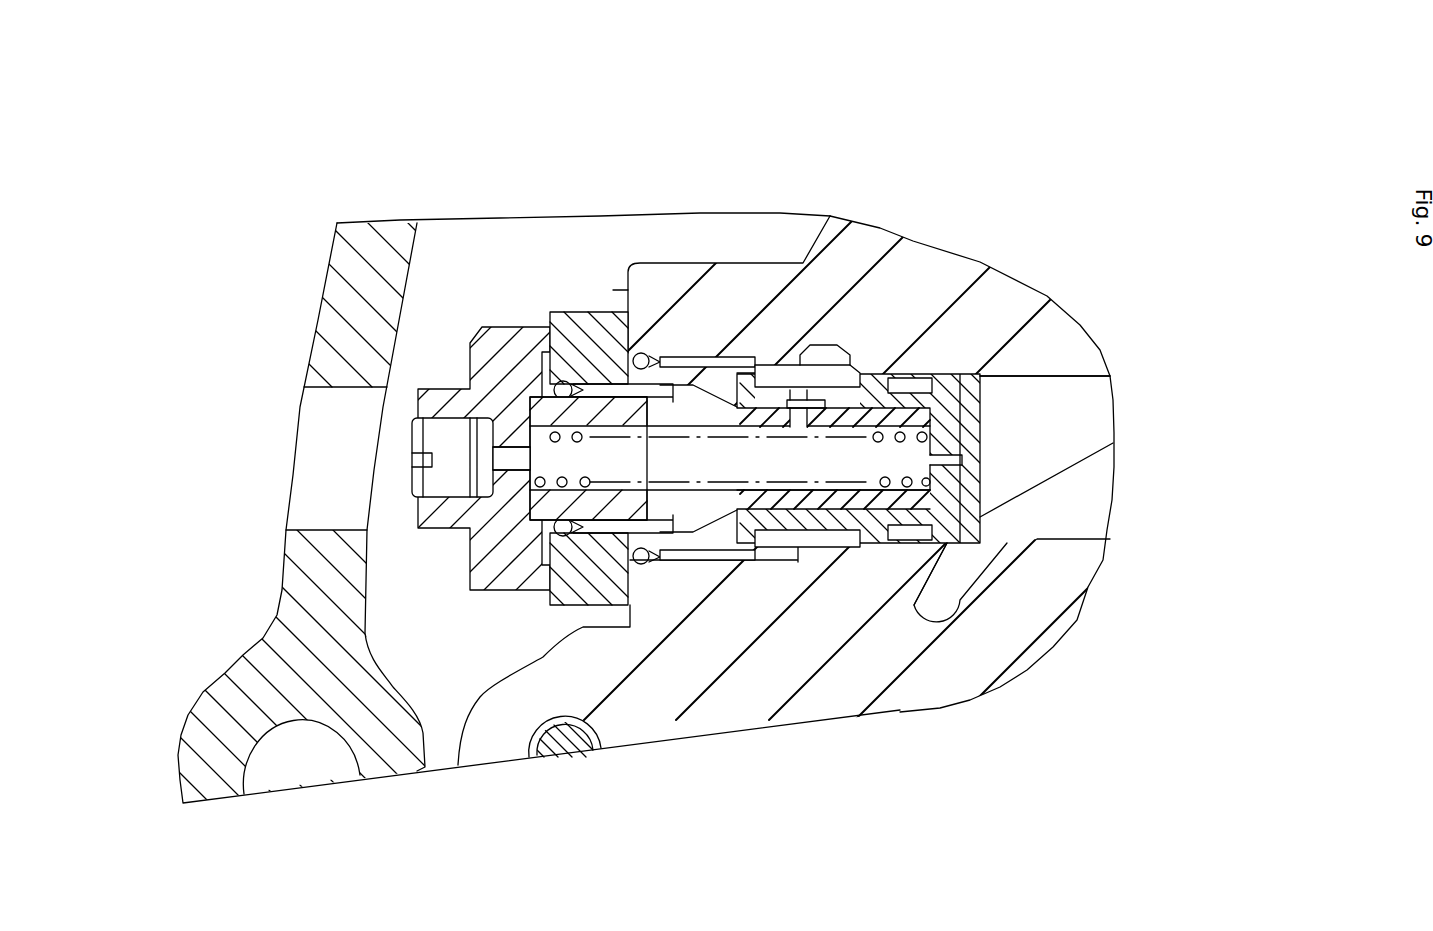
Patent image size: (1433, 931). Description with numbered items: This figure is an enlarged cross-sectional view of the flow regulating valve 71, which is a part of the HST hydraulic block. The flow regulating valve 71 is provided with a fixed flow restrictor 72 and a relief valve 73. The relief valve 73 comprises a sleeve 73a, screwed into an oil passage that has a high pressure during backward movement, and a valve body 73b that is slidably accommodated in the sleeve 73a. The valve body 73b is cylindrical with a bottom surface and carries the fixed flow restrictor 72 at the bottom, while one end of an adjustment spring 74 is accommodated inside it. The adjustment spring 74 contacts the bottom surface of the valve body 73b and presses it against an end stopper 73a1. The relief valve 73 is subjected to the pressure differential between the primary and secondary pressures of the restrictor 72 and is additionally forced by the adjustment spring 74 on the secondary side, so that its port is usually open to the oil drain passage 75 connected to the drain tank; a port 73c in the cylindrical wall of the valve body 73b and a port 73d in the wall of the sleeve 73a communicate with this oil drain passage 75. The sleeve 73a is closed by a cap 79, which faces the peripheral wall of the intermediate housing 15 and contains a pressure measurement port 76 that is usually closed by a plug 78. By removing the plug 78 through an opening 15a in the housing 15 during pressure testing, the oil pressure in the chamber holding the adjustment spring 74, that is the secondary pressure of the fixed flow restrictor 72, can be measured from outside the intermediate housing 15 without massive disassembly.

The intermediate housing 15 is at (323, 317).
The opening 15a is at (323, 528).
The flow regulating valve 71 is at (883, 352).
The fixed flow restrictor 72 is at (957, 460).
The relief valve 73 is at (782, 527).
The sleeve 73a is at (873, 543).
The end stopper 73a1 is at (980, 427).
The valve body 73b is at (947, 543).
The port 73c is at (800, 427).
The port 73d is at (798, 393).
The adjustment spring 74 is at (700, 478).
The oil drain passage 75 is at (831, 357).
The pressure measurement port 76 is at (503, 420).
The plug 78 is at (417, 437).
The cap 79 is at (553, 515).